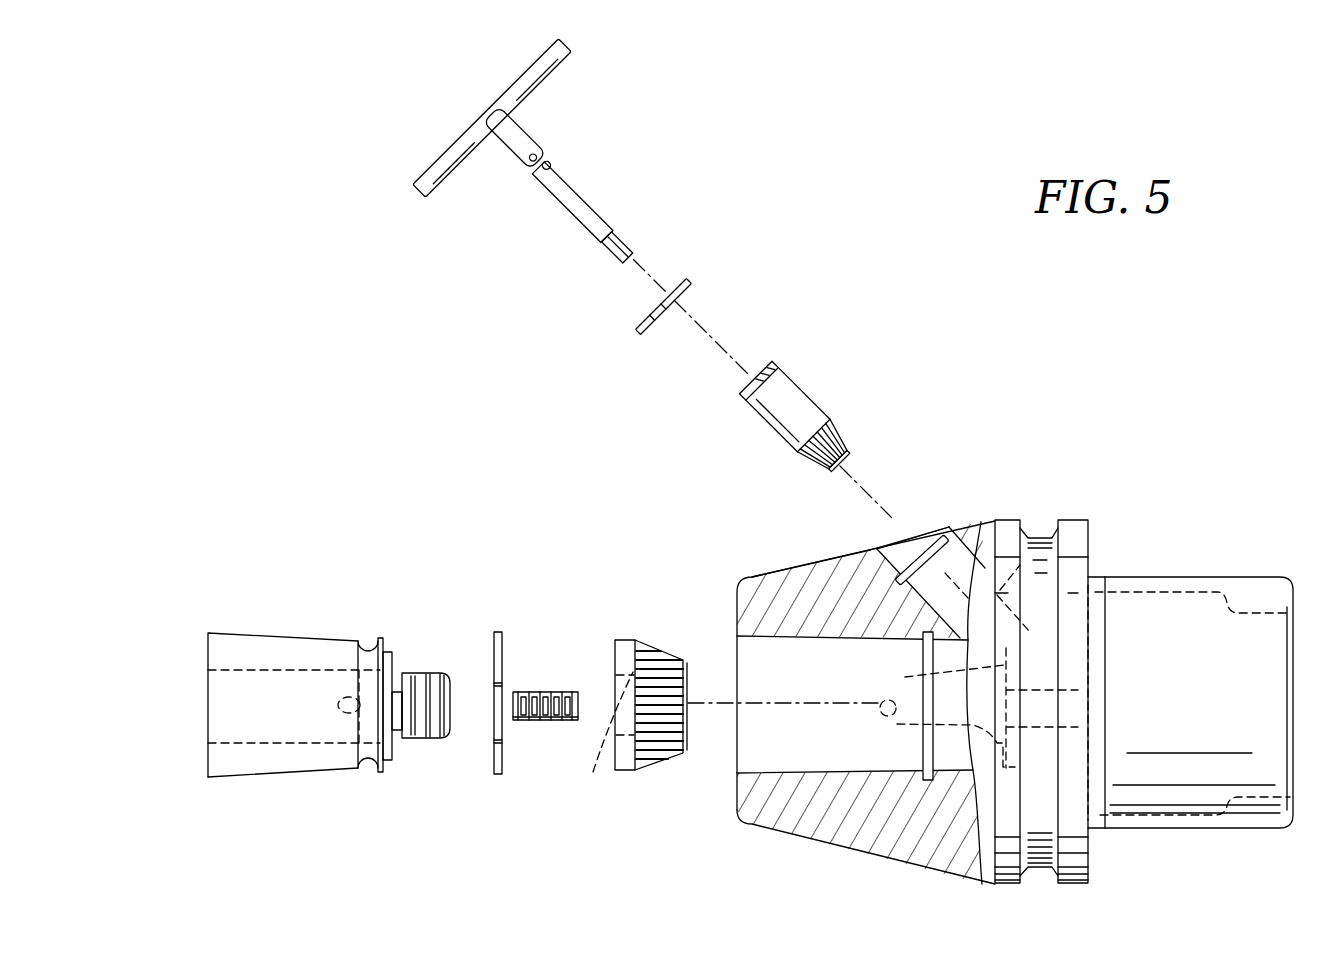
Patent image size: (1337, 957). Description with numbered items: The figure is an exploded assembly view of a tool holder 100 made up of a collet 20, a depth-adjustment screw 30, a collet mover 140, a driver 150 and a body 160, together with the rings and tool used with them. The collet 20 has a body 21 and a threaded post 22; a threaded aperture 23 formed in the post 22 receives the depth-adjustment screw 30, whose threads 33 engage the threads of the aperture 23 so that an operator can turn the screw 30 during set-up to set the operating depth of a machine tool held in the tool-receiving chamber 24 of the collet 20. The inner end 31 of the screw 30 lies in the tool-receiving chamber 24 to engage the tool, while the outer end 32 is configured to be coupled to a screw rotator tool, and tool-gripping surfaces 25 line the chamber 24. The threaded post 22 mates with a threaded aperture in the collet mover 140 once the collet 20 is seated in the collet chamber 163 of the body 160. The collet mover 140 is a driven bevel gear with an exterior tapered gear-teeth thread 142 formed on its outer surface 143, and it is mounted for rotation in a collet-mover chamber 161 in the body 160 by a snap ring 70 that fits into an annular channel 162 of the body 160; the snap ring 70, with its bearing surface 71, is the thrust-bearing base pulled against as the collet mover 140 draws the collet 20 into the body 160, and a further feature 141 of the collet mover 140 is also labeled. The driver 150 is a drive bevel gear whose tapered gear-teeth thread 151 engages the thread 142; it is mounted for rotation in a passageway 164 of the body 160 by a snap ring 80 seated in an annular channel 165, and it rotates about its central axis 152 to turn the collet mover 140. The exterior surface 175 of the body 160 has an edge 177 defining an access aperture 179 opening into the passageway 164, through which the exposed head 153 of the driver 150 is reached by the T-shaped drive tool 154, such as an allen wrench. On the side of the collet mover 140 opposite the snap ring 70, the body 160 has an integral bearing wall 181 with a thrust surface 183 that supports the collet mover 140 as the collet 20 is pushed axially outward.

The collet 20 is at (334, 632).
The body 21 is at (252, 778).
The threaded post 22 is at (446, 745).
The threaded aperture 23 is at (458, 702).
The tool-receiving chamber 24 is at (238, 710).
The tool-gripping surface 25 is at (268, 670).
The depth-adjustment screw 30 is at (543, 688).
The inner end 31 is at (508, 717).
The outer end 32 is at (580, 705).
The threads 33 is at (550, 722).
The snap ring 70 is at (498, 627).
The bearing surface 71 is at (504, 648).
The snap ring 80 is at (700, 277).
The tool holder 100 is at (937, 384).
The collet mover 140 is at (649, 600).
The filter passage 141 is at (600, 738).
The exterior tapered gear-teeth thread 142 is at (662, 650).
The outer surface 143 is at (627, 640).
The driver 150 is at (820, 376).
The tapered gear-teeth thread 151 is at (826, 448).
The central axis 152 is at (788, 410).
The exposed head 153 is at (758, 380).
The drive tool 154 is at (620, 199).
The body 160 is at (1100, 538).
The collet-mover chamber 161 is at (960, 742).
The locating pin 162 is at (921, 744).
The housing bore 163 is at (820, 750).
The passageway 164 is at (933, 575).
The annular channel 165 is at (944, 532).
The exterior surface 175 is at (780, 566).
The edge 177 is at (880, 545).
The access aperture 179 is at (900, 528).
The integral bearing wall 181 is at (937, 733).
The thrust surface 183 is at (969, 666).